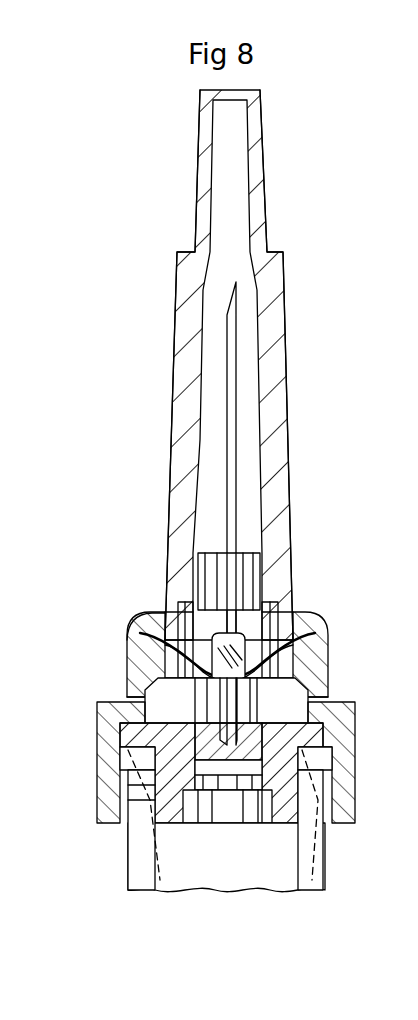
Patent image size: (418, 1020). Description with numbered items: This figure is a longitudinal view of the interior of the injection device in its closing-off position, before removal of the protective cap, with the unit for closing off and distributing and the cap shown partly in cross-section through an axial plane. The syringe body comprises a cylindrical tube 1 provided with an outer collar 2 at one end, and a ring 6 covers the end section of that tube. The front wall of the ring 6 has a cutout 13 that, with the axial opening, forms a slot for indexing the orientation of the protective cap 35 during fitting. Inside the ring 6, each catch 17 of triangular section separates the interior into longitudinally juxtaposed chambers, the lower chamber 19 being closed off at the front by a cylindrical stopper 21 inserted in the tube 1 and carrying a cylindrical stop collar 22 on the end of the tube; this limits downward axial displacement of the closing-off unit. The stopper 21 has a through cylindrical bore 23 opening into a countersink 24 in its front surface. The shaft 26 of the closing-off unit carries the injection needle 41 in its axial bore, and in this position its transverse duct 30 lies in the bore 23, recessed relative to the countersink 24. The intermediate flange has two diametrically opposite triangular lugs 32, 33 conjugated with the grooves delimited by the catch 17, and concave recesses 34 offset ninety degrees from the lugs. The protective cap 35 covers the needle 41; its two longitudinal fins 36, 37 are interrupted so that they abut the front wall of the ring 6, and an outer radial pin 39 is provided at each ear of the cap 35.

The cylindrical tube 1 is at (137, 856).
The outer collar 2 is at (125, 760).
The ring 6 is at (355, 726).
The cutout 13 is at (160, 612).
The catch 17 is at (148, 675).
The lower chamber 19 is at (290, 703).
The cylindrical stopper 21 is at (330, 795).
The cylindrical stop collar 22 is at (120, 732).
The through cylindrical bore 23 is at (212, 793).
The countersink 24 is at (232, 808).
The shaft 26 is at (255, 572).
The transverse duct 30 is at (134, 785).
The lug 32 is at (148, 625).
The lug 33 is at (325, 648).
The recess 34 is at (178, 604).
The protective cap 35 is at (150, 262).
The longitudinal fin 36 is at (175, 370).
The longitudinal fin 37 is at (285, 378).
The outer radial pin 39 is at (262, 597).
The injection needle 41 is at (236, 352).